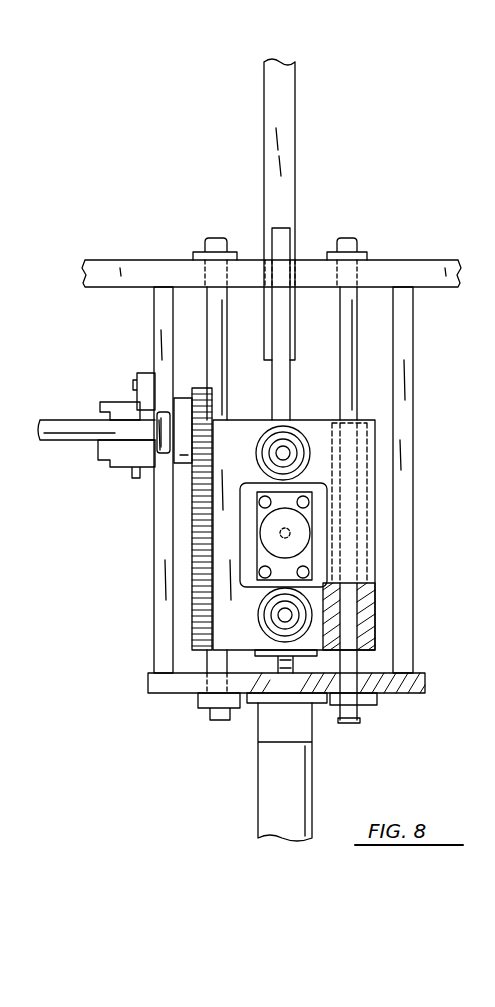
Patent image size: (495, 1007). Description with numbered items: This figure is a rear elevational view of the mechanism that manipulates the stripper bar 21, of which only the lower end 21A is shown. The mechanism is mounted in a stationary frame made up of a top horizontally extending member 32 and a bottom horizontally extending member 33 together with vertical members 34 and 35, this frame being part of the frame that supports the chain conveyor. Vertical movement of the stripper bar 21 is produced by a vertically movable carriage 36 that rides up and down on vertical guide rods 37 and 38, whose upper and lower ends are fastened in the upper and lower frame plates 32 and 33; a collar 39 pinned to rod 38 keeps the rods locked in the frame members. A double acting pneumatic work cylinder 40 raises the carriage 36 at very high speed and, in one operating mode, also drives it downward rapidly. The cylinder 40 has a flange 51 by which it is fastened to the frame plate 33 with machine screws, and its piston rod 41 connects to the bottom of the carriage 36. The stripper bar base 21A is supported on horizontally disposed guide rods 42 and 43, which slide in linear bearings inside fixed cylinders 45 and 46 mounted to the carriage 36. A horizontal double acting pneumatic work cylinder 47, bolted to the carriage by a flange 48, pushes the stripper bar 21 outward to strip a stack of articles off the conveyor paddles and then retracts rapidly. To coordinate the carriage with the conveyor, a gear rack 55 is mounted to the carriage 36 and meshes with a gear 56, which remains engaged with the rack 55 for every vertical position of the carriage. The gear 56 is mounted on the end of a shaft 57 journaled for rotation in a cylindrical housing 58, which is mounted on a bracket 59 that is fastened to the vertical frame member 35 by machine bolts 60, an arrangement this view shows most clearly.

The stripper bar 21 is at (298, 105).
The lower end of stripper bar 21A is at (293, 227).
The top horizontally extending frame member 32 is at (432, 262).
The bottom horizontally extending frame member 33 is at (424, 685).
The vertical frame member 34 is at (413, 309).
The vertical frame member 35 is at (153, 303).
The vertically movable carriage 36 is at (376, 428).
The vertical guide rod 37 is at (218, 326).
The vertical guide rod 38 is at (337, 322).
The collar 39 is at (196, 250).
The double acting pneumatic work cylinder 40 is at (313, 763).
The piston rod 41 is at (277, 663).
The horizontally disposed guide rod 42 is at (288, 453).
The horizontally disposed guide rod 43 is at (276, 619).
The fixed cylinder 45 is at (268, 438).
The fixed cylinder 46 is at (262, 604).
The horizontal pneumatic work cylinder 47 is at (305, 528).
The flange 48 is at (306, 500).
The flange 51 is at (280, 703).
The gear rack 55 is at (198, 518).
The gear 56 is at (195, 468).
The shaft 57 is at (70, 400).
The cylindrical housing 58 is at (113, 399).
The bracket 59 is at (143, 372).
The machine bolts 60 is at (136, 386).